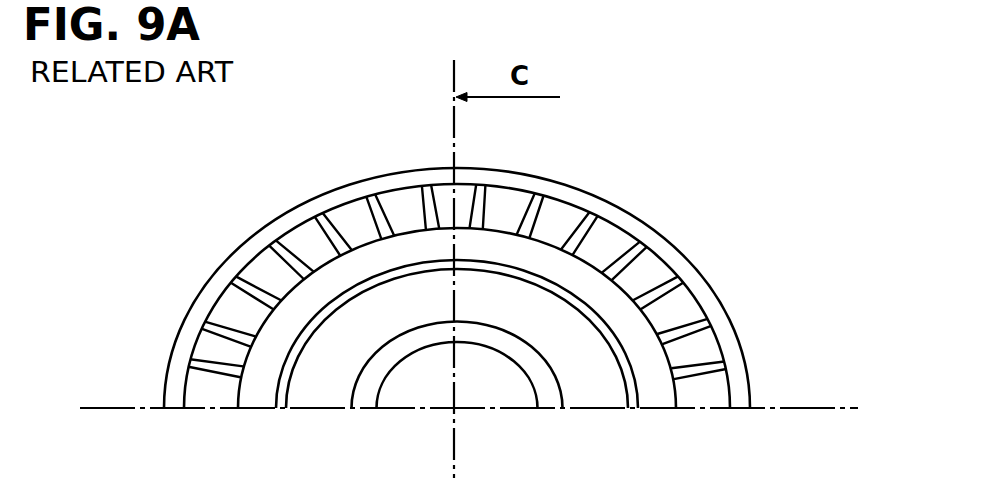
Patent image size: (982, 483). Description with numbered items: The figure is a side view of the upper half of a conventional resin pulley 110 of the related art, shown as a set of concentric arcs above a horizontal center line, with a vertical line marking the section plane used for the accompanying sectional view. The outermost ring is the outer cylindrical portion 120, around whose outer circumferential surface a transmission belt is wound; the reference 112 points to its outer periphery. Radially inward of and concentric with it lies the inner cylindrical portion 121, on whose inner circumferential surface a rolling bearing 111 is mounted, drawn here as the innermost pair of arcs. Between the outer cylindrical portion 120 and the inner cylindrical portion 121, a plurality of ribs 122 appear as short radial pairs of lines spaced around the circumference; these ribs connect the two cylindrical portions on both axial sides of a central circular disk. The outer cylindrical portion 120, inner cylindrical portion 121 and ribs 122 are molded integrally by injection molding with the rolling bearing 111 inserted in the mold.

The resin pulley 110 is at (623, 181).
The rolling bearing 111 is at (596, 371).
The outer frame (yoke) 112 is at (697, 265).
The outer cylindrical portion 120 is at (530, 182).
The inner cylindrical portion 121 is at (357, 227).
The ribs 122 is at (293, 260).